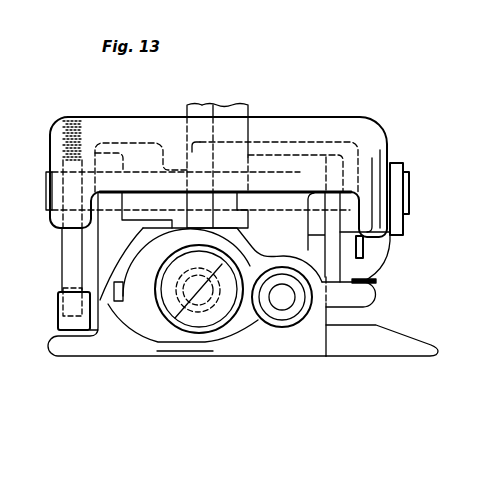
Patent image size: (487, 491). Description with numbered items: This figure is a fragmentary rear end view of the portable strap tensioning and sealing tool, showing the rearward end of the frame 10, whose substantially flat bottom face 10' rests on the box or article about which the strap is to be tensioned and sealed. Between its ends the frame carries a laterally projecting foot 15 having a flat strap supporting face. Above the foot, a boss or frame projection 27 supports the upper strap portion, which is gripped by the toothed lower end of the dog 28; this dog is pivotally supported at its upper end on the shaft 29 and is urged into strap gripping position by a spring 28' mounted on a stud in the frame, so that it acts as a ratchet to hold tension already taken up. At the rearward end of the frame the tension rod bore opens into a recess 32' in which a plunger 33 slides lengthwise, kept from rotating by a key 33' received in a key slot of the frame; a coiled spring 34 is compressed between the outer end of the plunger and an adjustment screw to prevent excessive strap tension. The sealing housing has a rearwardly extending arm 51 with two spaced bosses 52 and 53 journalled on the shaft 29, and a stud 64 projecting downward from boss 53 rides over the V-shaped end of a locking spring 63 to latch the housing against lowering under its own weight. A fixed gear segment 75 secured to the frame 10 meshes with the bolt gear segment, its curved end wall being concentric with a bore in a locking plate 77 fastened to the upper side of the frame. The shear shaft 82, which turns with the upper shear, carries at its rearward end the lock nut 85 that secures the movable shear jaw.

The frame 10 is at (182, 287).
The flat bottom face 10' is at (209, 368).
The foot 15 is at (402, 340).
The boss or frame projection 27 is at (376, 296).
The dog 28 is at (389, 254).
The spring 28' is at (411, 251).
The shaft 29 is at (410, 196).
The recess 32' is at (181, 325).
The plunger 33 is at (177, 305).
The key 33' is at (122, 274).
The coiled spring 34 is at (213, 338).
The arm 51 is at (308, 118).
The boss 52 is at (385, 152).
The boss 53 is at (50, 182).
The locking spring 63 is at (60, 310).
The stud 64 is at (68, 250).
The fixed gear segment 75 is at (247, 108).
The locking plate 77 is at (190, 106).
The shear shaft 82 is at (280, 303).
The nut 85 is at (285, 324).